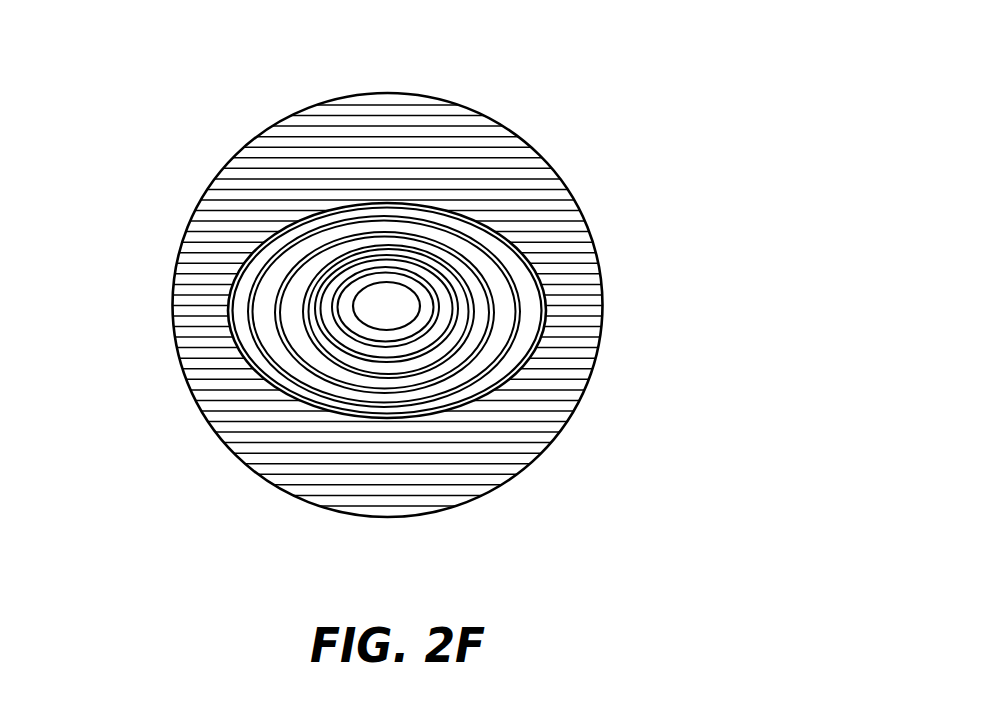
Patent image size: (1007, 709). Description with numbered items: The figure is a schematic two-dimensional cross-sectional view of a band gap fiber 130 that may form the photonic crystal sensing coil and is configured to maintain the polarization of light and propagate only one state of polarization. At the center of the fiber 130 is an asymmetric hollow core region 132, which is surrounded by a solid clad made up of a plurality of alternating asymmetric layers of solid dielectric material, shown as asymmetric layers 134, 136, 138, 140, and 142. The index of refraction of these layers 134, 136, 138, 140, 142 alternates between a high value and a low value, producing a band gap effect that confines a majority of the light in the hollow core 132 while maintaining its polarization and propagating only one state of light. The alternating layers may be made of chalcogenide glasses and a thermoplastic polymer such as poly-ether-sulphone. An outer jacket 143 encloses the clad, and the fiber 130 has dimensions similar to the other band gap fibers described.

The band gap fiber 130 is at (118, 320).
The asymmetric hollow core region 132 is at (243, 248).
The asymmetric layer 134 is at (349, 345).
The asymmetric layer 136 is at (382, 368).
The asymmetric layer 138 is at (420, 383).
The asymmetric layer 140 is at (463, 392).
The asymmetric layer 142 is at (502, 390).
The jacket 143 is at (365, 93).